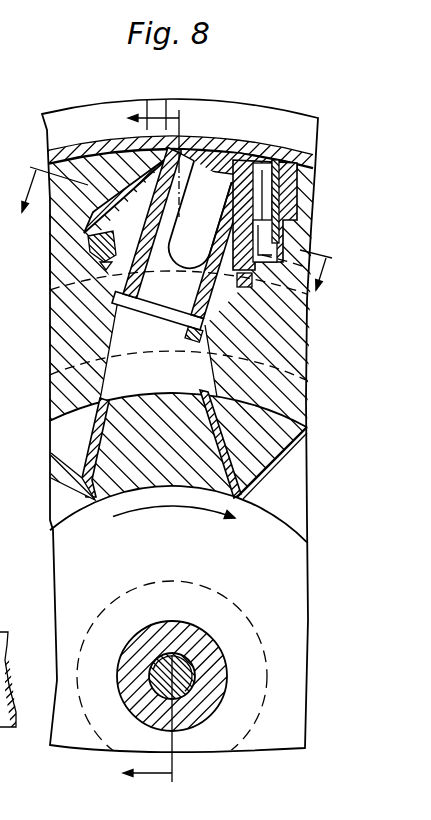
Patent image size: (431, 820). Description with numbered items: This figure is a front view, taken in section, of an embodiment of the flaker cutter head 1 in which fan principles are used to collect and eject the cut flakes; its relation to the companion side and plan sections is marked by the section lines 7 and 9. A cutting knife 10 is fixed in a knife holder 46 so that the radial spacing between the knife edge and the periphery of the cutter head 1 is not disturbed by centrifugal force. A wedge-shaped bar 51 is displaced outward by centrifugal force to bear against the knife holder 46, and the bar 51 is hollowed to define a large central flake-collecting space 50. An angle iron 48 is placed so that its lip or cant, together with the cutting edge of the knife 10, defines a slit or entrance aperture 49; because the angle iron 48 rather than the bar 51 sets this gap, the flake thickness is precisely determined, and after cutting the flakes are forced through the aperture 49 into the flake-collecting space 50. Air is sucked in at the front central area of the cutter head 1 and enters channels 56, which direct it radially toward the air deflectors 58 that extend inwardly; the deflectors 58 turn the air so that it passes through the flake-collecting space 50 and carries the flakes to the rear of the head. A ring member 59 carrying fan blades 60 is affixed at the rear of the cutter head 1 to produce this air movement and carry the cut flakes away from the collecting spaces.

The cutter head 1 is at (72, 399).
The section line VII-VII 7 is at (162, 443).
The section line IX-IX 9 is at (183, 219).
The cutting knife 10 is at (136, 160).
The knife holder 46 is at (103, 156).
The angle iron 48 is at (222, 160).
The entrance aperture 49 is at (195, 101).
The flake-collecting space 50 is at (213, 199).
The wedge-shaped bar 51 is at (204, 303).
The channel 56 is at (182, 428).
The air deflector 58 is at (90, 443).
The ring member 59 is at (10, 253).
The fan blade 60 is at (157, 130).